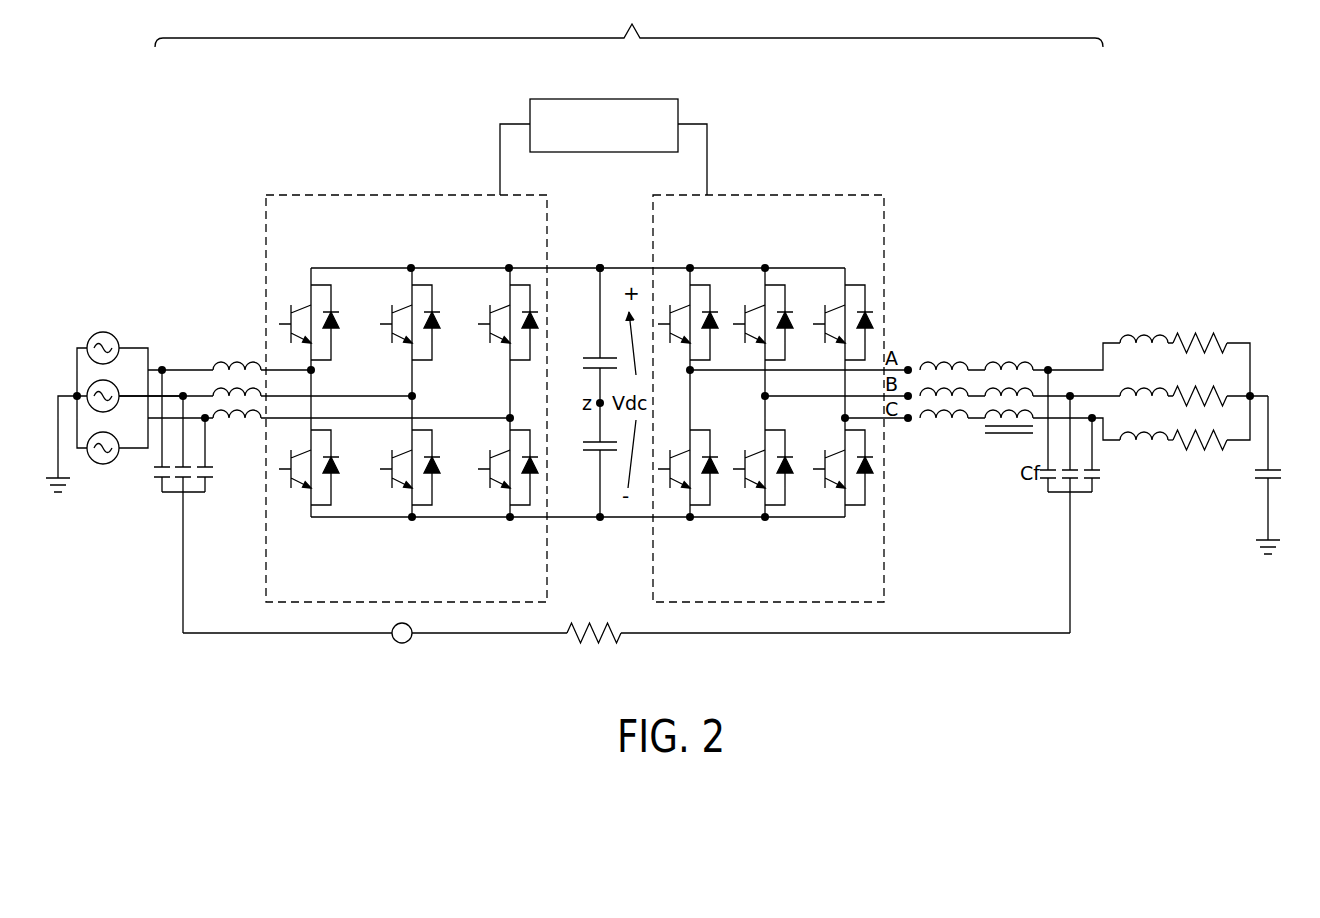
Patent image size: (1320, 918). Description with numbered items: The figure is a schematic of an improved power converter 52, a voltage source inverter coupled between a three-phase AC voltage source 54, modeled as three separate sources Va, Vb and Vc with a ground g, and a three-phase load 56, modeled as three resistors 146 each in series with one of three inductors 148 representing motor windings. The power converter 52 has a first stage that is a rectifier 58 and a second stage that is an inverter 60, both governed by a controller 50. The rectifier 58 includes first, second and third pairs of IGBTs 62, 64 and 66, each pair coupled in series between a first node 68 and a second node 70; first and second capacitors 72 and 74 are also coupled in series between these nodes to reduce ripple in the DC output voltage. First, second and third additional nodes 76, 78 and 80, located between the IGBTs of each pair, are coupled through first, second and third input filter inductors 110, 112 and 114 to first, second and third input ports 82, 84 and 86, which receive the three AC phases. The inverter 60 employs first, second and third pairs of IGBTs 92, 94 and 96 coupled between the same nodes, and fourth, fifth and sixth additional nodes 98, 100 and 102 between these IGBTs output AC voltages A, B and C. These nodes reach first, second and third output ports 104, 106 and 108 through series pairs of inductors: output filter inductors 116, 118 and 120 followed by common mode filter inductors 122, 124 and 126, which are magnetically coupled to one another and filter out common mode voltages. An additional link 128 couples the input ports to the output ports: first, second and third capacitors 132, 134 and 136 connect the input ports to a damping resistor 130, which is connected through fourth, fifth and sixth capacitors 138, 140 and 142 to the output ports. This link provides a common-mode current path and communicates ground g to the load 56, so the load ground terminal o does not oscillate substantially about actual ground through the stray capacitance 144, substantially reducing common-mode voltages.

The controller 50 is at (604, 98).
The power converter 52 is at (629, 23).
The three-phase AC voltage source 54 is at (96, 312).
The three-phase load 56 is at (1173, 300).
The rectifier 58 is at (415, 193).
The inverter 60 is at (785, 193).
The first pair of IGBTs 62 is at (284, 300).
The second pair of IGBTs 64 is at (424, 375).
The third pair of IGBTs 66 is at (499, 298).
The first node 68 is at (583, 262).
The second node 70 is at (598, 523).
The first capacitor 72 is at (585, 345).
The second capacitor 74 is at (590, 461).
The first additional node 76 is at (297, 358).
The second additional node 78 is at (404, 385).
The third additional node 80 is at (498, 413).
The first input port 82 is at (172, 365).
The second input port 84 is at (145, 404).
The third input port 86 is at (192, 423).
The first pair of IGBTs 92 is at (717, 338).
The second pair of IGBTs 94 is at (793, 339).
The third pair of IGBTs 96 is at (876, 298).
The fourth additional node 98 is at (697, 371).
The fifth additional node 100 is at (775, 406).
The sixth additional node 102 is at (858, 422).
The first output port 104 is at (1063, 365).
The second output port 106 is at (1088, 387).
The third output port 108 is at (1042, 425).
The first input filter inductor 110 is at (220, 364).
The second input filter inductor 112 is at (236, 388).
The third input filter inductor 114 is at (238, 422).
The output filter inductor 116 is at (945, 365).
The output filter inductor 118 is at (943, 392).
The output filter inductor 120 is at (932, 412).
The common mode filter inductor 122 is at (1010, 362).
The common mode filter inductor 124 is at (992, 387).
The common mode filter inductor 126 is at (1022, 413).
The additional link 128 is at (402, 645).
The resistor 130 is at (572, 641).
The first capacitor 132 is at (158, 479).
The second capacitor 134 is at (178, 481).
The third capacitor 136 is at (198, 494).
The fourth capacitor 138 is at (1043, 480).
The fifth capacitor 140 is at (1072, 480).
The sixth capacitor 142 is at (1095, 480).
The stray capacitance 144 is at (1281, 473).
The resistors 146 is at (1202, 466).
The inductors 148 is at (1140, 458).